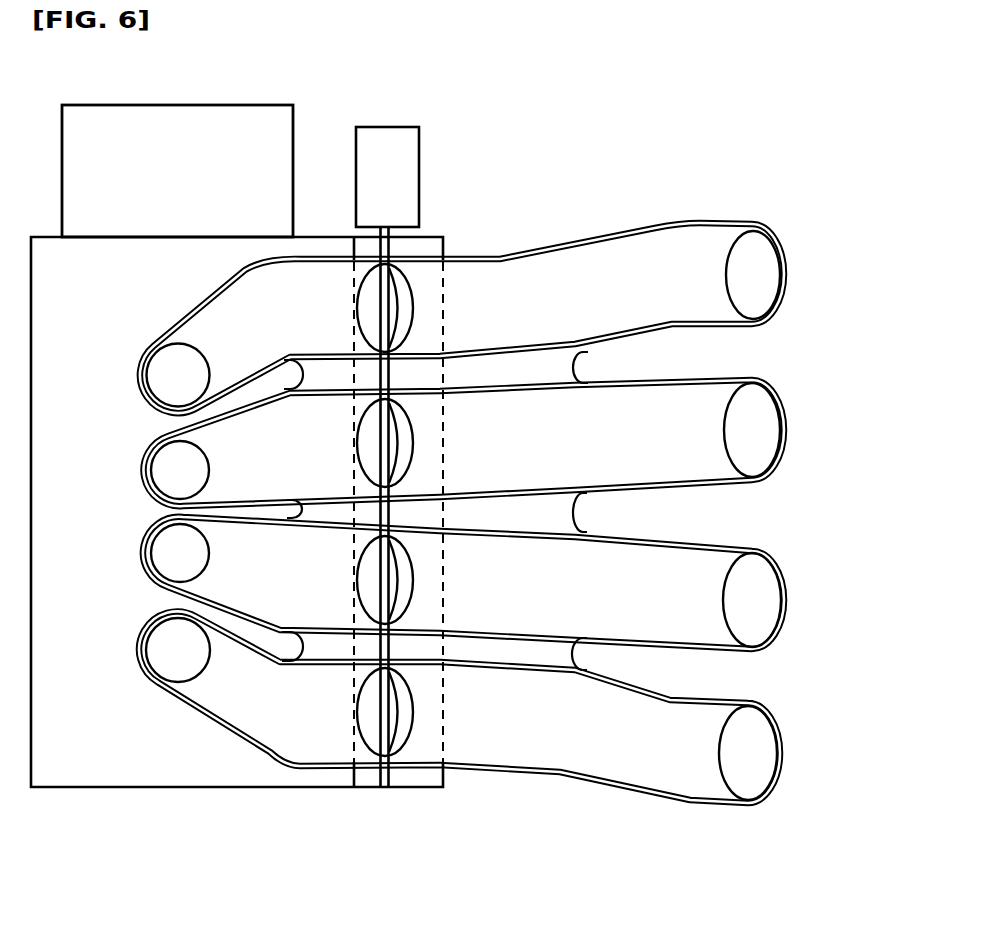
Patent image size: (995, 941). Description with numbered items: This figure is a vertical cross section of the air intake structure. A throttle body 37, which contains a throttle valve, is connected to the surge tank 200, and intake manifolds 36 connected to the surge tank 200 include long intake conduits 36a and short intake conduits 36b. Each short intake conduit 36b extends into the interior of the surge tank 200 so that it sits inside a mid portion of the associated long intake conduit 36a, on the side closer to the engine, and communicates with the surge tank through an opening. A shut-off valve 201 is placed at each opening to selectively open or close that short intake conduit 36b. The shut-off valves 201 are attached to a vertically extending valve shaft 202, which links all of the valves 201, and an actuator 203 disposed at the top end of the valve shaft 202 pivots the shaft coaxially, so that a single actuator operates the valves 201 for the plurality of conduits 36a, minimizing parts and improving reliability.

The intake manifold 36 is at (730, 205).
The long intake conduit 36a is at (217, 297).
The short intake conduit 36b is at (441, 320).
The throttle body 37 is at (208, 124).
The surge tank 200 is at (80, 803).
The shut-off valve 201 is at (366, 323).
The valve shaft 202 is at (392, 243).
The actuator 203 is at (377, 170).